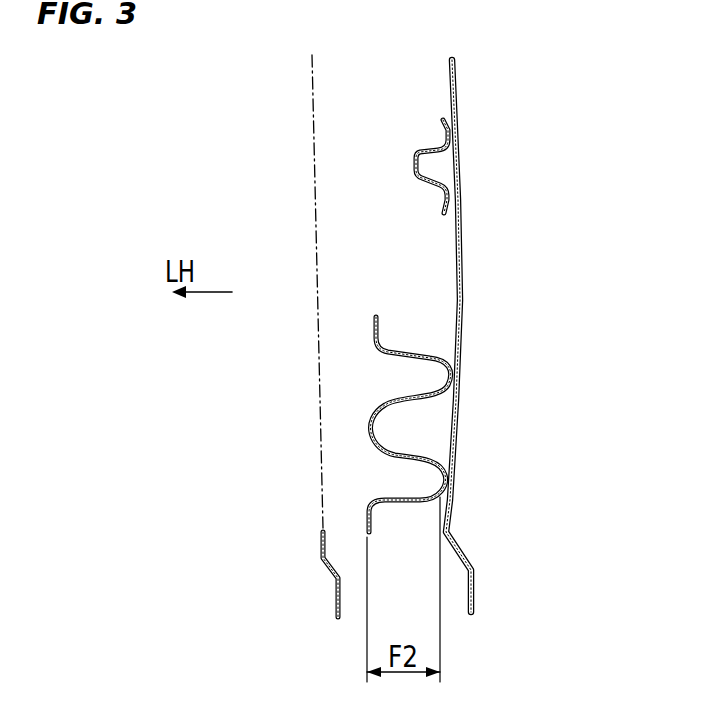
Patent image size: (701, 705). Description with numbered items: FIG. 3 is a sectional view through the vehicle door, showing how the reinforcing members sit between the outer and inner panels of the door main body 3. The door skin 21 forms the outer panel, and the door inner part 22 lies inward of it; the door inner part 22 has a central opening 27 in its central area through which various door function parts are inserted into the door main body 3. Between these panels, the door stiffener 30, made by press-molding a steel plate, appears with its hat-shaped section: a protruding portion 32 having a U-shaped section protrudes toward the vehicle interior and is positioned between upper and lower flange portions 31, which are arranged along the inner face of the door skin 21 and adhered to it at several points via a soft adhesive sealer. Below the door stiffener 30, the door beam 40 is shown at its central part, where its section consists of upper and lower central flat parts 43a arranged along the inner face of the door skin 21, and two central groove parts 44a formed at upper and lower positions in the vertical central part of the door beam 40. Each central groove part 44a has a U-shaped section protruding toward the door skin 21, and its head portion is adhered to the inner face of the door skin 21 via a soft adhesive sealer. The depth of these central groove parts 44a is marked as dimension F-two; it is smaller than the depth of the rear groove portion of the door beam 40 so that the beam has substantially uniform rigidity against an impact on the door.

The door main body 3 is at (513, 587).
The door skin 21 is at (468, 545).
The door inner part 22 is at (324, 570).
The central opening 27 is at (320, 530).
The door stiffener 30 is at (413, 149).
The flange portions 31 is at (442, 127).
The protruding portion 32 is at (413, 170).
The door beam 40 is at (372, 345).
The central flat parts 43a is at (376, 315).
The central groove parts 44a is at (423, 348).